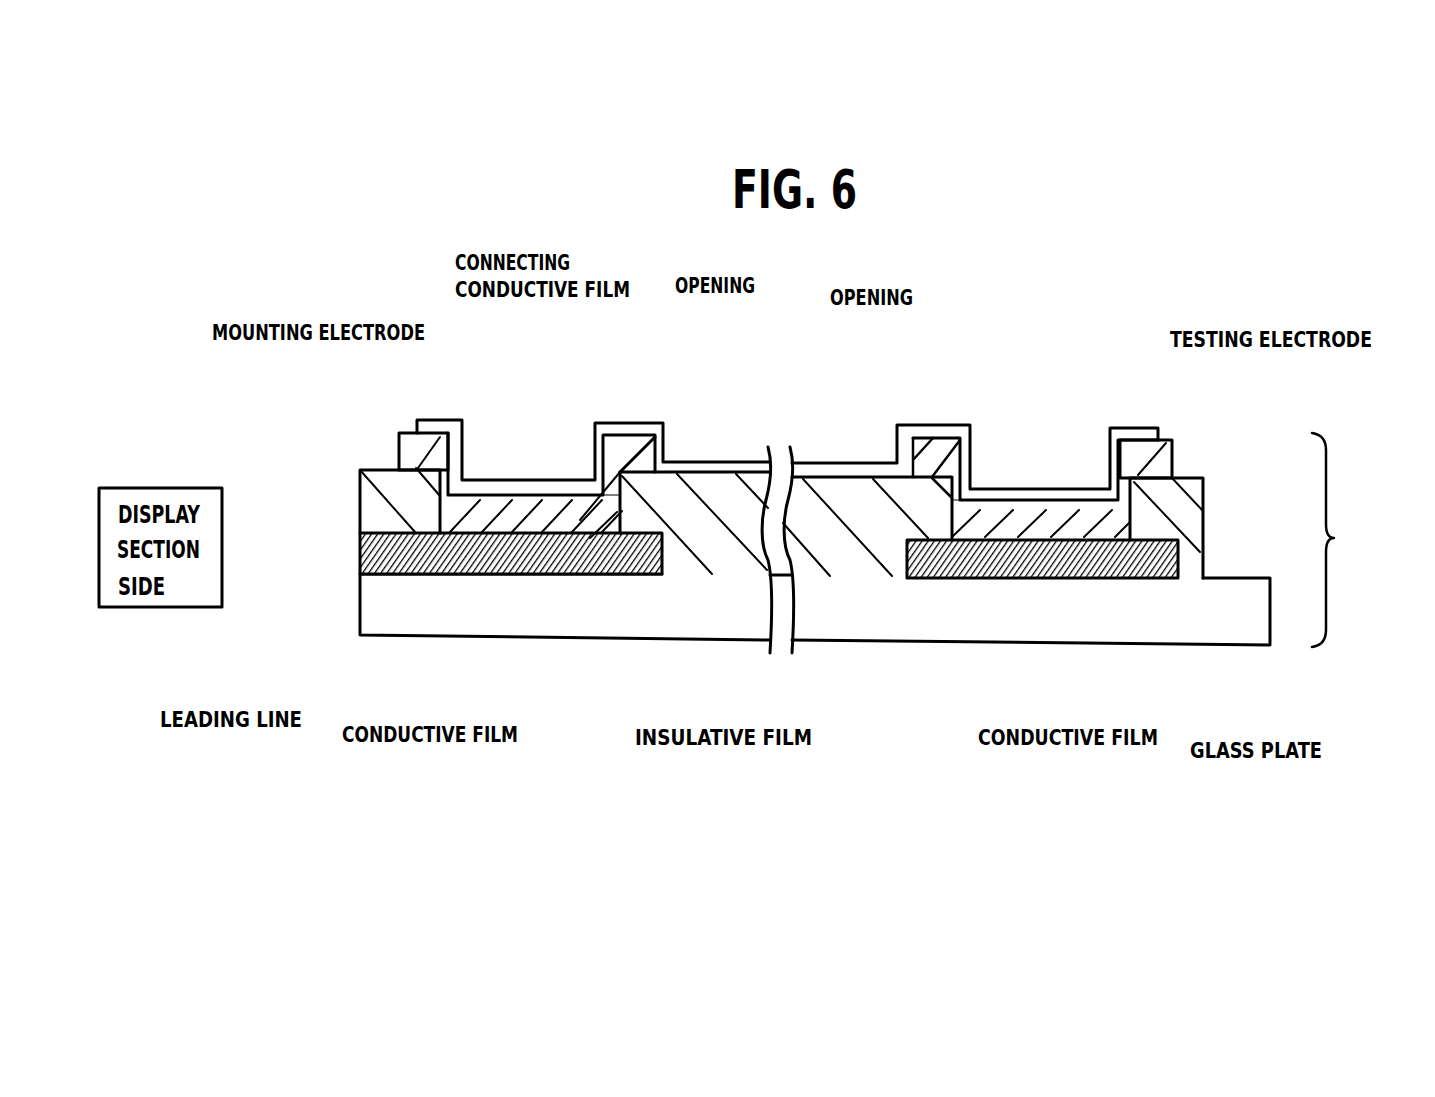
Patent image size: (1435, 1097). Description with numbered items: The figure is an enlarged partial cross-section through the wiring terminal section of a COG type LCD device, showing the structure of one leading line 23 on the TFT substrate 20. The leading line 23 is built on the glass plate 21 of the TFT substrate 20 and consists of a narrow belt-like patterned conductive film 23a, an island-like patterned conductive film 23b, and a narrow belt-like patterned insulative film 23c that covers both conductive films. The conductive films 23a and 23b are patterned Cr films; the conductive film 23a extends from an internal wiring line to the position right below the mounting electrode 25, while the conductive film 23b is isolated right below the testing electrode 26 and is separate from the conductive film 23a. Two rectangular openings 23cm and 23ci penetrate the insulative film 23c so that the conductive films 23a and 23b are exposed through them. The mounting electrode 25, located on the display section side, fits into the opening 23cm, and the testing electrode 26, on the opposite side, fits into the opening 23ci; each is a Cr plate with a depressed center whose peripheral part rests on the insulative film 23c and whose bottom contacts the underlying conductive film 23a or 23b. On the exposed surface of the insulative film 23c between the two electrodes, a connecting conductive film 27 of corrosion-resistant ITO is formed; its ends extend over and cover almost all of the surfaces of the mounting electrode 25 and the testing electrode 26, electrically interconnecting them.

The TFT substrate 20 is at (1373, 540).
The glass plate 21 is at (1213, 630).
The leading line 23 is at (354, 550).
The conductive film 23a is at (382, 548).
The conductive film 23b is at (1020, 562).
The insulative film 23c is at (372, 515).
The opening 23cm is at (607, 514).
The opening 23ci is at (950, 511).
The mounting electrode 25 is at (408, 450).
The testing electrode 26 is at (1165, 460).
The connecting conductive film 27 is at (458, 418).